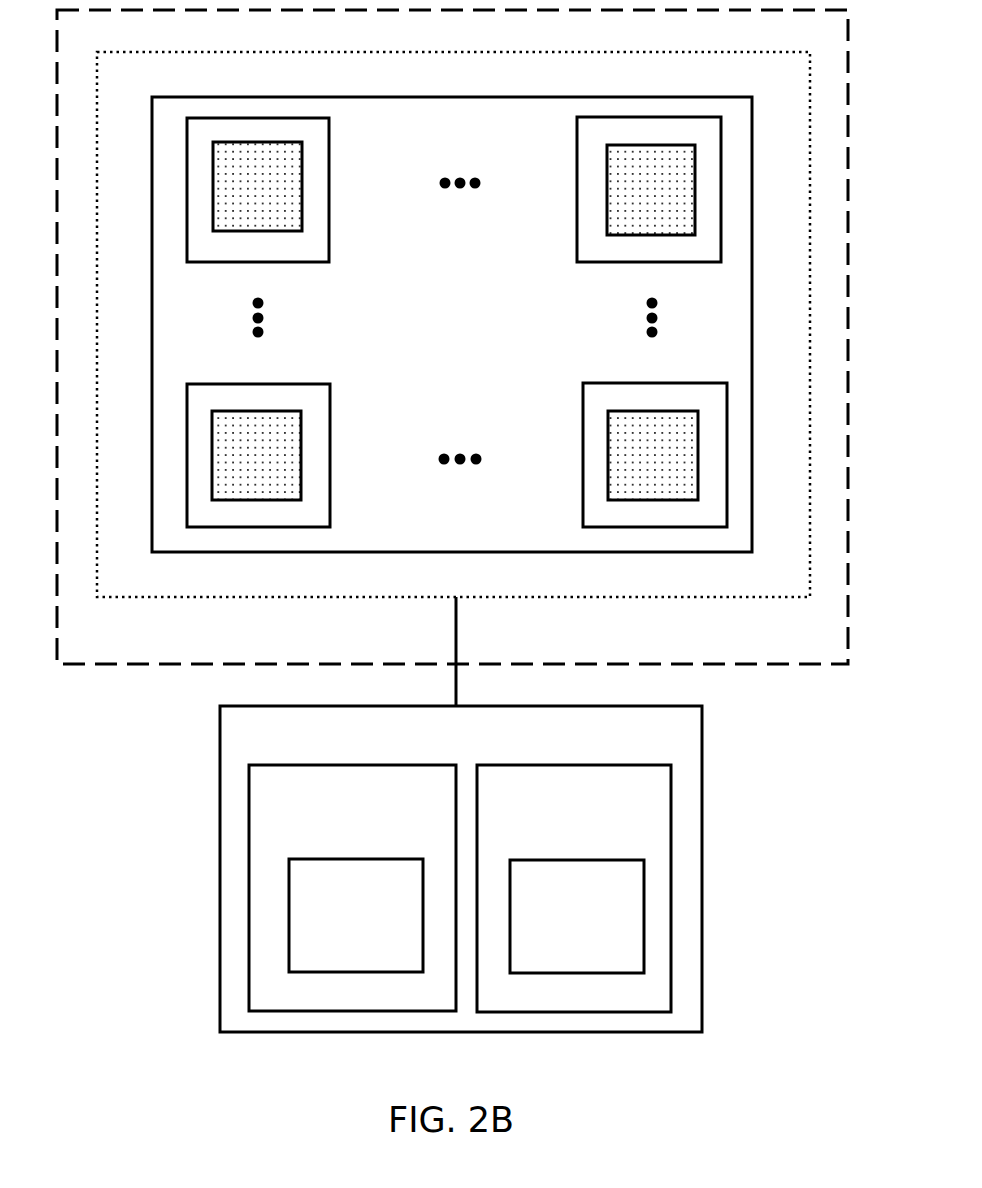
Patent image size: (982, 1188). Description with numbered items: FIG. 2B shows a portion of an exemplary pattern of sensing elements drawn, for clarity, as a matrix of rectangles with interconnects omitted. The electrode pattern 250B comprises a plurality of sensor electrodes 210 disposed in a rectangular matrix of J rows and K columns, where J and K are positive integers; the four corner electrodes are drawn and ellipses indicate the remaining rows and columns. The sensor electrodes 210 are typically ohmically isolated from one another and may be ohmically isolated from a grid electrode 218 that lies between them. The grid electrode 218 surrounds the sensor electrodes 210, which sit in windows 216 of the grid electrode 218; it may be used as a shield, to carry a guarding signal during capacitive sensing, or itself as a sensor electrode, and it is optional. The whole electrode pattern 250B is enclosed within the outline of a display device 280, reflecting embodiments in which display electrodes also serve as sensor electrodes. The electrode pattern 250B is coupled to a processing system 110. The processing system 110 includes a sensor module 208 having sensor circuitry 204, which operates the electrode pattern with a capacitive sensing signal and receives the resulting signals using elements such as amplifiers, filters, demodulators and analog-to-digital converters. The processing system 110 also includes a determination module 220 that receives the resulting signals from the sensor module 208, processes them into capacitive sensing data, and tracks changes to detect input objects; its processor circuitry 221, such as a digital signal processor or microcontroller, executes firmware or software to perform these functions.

The processing system 110 is at (568, 740).
The sensor circuitry 204 is at (371, 956).
The sensor module 208 is at (440, 800).
The sensor electrodes 210 is at (658, 465).
The windows 216 is at (313, 428).
The grid electrode 218 is at (543, 537).
The determination module 220 is at (627, 831).
The processor circuitry 221 is at (633, 942).
The electrode pattern 250B is at (765, 598).
The display device 280 is at (778, 665).